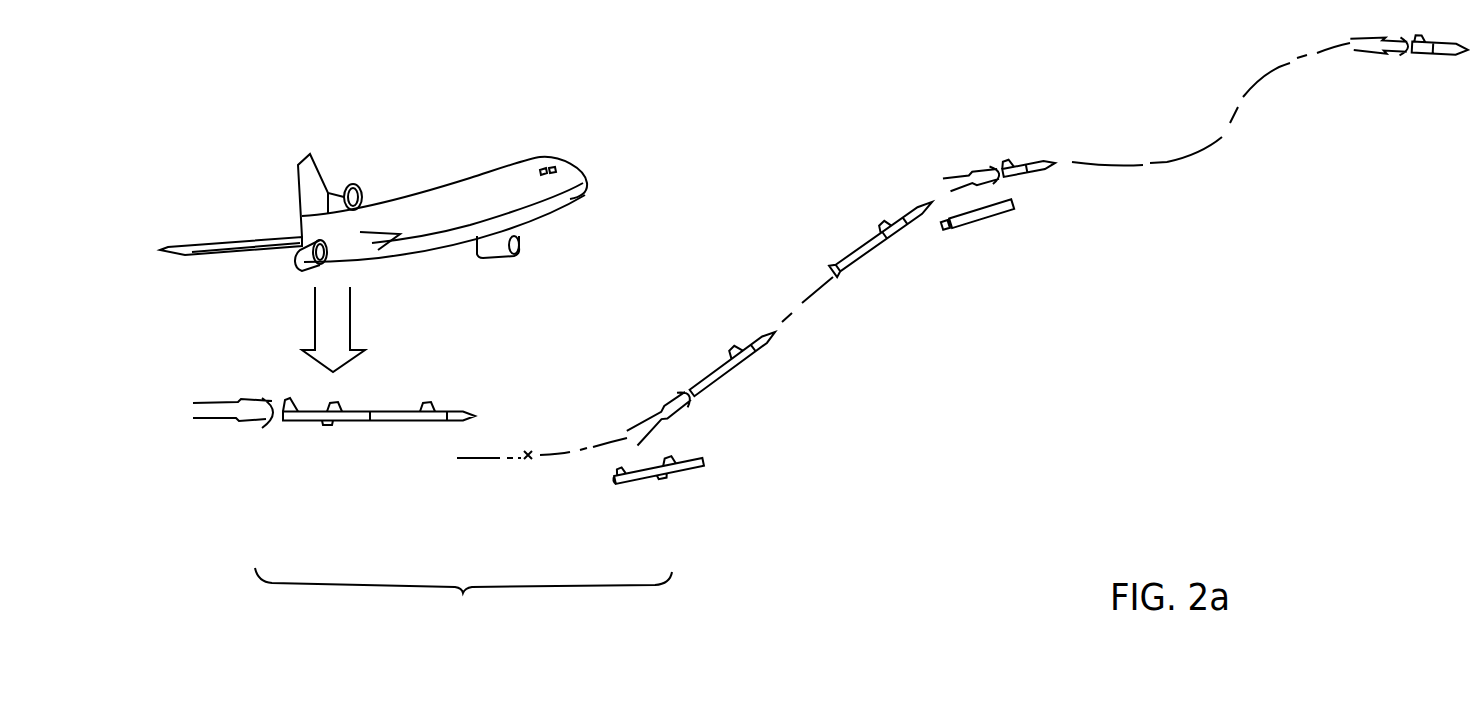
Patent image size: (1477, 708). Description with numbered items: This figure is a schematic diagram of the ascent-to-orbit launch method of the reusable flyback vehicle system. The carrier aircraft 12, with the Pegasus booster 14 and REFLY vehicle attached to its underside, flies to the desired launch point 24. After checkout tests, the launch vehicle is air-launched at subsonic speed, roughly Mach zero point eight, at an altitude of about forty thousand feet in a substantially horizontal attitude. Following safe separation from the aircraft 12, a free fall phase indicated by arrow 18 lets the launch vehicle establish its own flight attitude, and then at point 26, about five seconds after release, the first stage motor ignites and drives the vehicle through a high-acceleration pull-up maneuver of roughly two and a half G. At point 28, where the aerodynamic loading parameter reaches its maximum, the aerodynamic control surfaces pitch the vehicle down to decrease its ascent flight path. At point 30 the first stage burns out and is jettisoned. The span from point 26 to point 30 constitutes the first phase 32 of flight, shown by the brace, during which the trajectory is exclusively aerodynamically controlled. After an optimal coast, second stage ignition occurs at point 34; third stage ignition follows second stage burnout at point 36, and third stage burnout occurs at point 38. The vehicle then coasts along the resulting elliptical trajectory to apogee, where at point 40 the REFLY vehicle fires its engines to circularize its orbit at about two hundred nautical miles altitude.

The carrier aircraft 12 is at (488, 162).
The Pegasus booster 14 is at (373, 426).
The free fall phase 18 is at (352, 318).
The launch point 24 is at (386, 140).
The point of first stage ignition 26 is at (297, 444).
The point of peak aerodynamic load 28 is at (530, 468).
The point of first stage burnout and jettison 30 is at (689, 487).
The first phase 32 is at (463, 603).
The point of second stage ignition 34 is at (781, 357).
The point of third stage ignition 36 is at (967, 158).
The point of third stage burnout 38 is at (1223, 148).
The point of orbit circularization 40 is at (1390, 62).